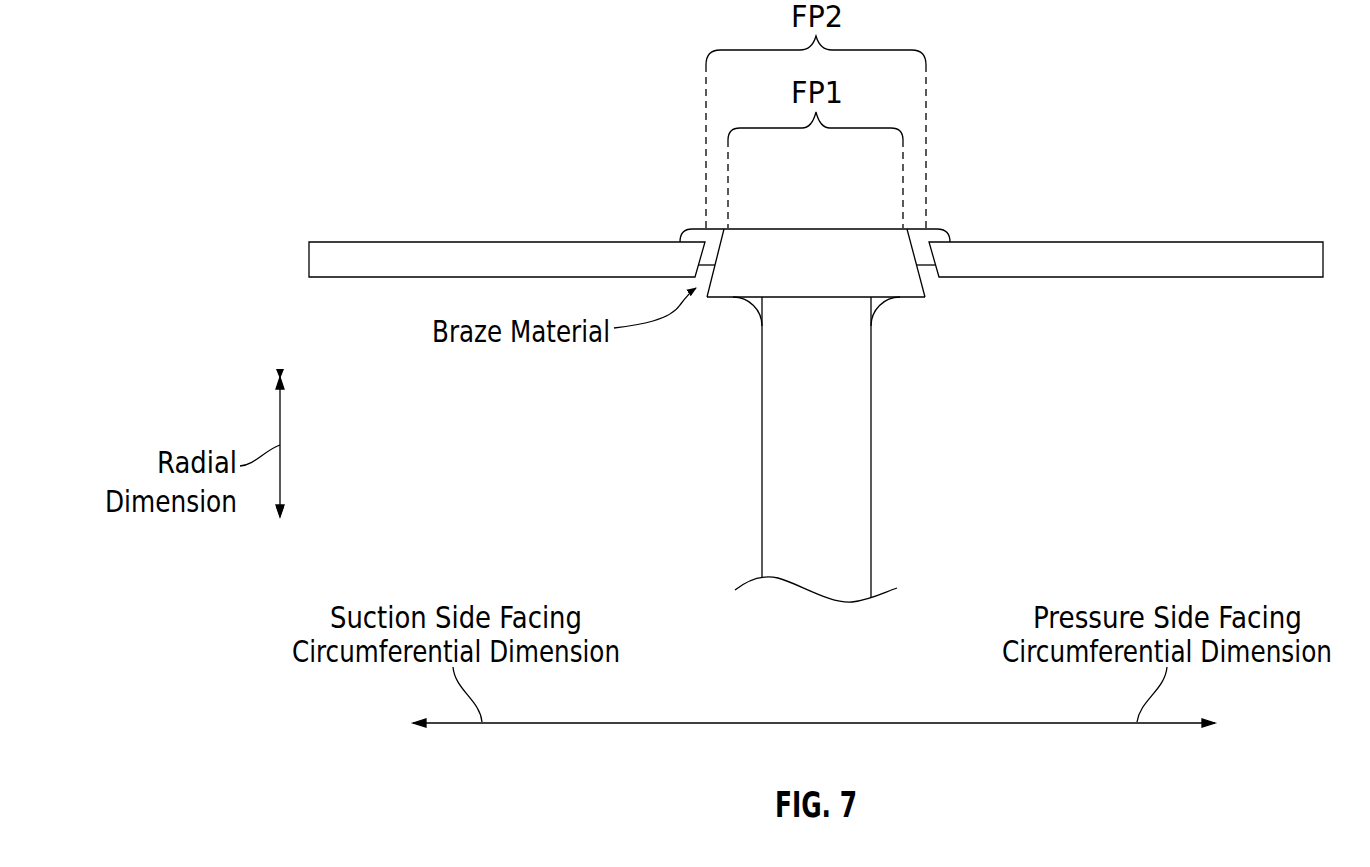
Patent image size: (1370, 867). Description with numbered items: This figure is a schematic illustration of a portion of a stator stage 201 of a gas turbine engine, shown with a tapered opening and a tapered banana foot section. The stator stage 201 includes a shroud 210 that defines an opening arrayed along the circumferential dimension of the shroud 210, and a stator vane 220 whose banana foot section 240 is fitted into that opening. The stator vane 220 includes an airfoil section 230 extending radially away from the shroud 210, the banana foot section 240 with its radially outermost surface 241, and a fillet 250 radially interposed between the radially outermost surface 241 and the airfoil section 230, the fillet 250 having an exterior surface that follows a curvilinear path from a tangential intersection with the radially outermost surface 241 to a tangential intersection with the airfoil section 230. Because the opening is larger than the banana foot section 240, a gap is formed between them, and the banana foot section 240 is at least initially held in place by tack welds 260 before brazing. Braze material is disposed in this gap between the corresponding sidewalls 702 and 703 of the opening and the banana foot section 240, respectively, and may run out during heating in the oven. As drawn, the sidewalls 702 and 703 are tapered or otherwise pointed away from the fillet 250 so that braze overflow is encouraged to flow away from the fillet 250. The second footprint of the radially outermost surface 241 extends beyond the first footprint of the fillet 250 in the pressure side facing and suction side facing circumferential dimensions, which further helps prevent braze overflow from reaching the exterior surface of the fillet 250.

The stator stage 201 is at (391, 163).
The shroud 210 is at (309, 262).
The stator vane 220 is at (856, 449).
The airfoil section 230 is at (841, 496).
The banana foot section 240 is at (827, 276).
The radially outermost surface 241 is at (715, 297).
The fillet 250 is at (882, 308).
The tack weld 260 is at (690, 231).
The sidewall of the opening 702 is at (940, 271).
The sidewall of the banana foot section 703 is at (923, 282).